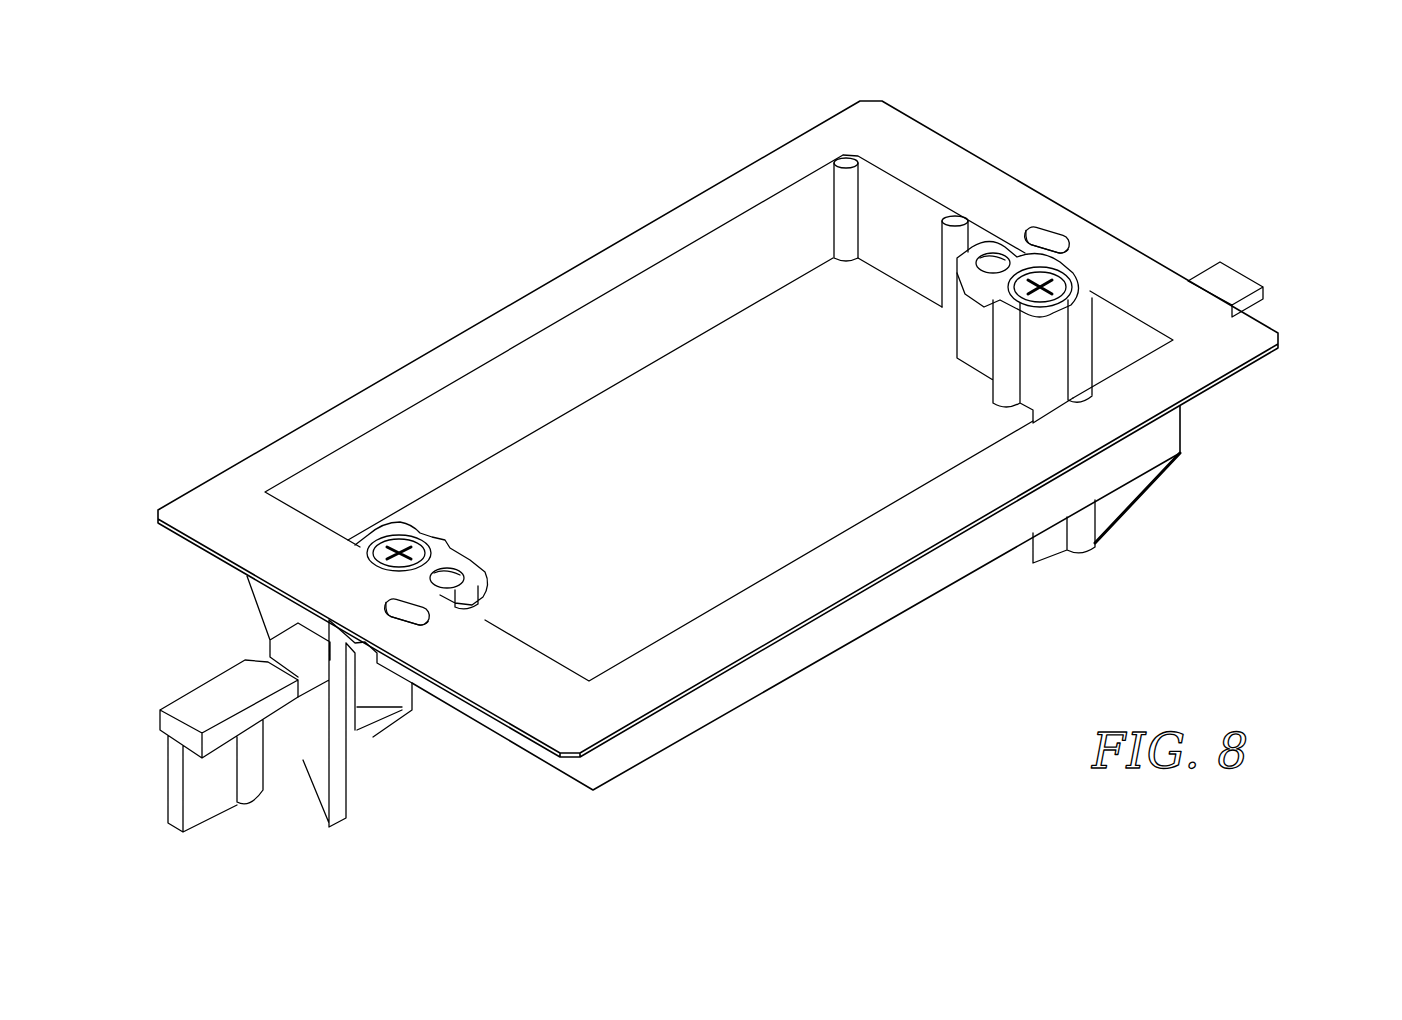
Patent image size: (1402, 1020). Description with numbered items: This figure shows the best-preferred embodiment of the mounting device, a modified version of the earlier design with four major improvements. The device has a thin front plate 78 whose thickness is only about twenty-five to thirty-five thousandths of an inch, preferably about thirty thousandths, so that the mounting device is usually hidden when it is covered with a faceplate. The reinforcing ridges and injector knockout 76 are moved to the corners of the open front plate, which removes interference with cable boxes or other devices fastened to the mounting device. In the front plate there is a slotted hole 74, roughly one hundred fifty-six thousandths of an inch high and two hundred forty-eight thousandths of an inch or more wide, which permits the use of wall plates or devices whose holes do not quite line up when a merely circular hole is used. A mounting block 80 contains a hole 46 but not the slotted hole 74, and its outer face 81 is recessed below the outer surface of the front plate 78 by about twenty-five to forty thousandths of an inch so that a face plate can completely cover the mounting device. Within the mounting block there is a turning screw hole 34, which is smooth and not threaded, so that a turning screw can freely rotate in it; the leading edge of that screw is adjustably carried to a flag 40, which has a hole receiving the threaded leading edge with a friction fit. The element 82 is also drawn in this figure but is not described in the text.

The turning screw hole 34 is at (420, 533).
The flag 40 is at (170, 682).
The hole 46 is at (993, 270).
The slotted hole 74 is at (1037, 228).
The injector knockout 76 is at (858, 263).
The front plate 78 is at (848, 567).
The mounting block 80 is at (723, 425).
The outer face 81 is at (980, 277).
The post 82 is at (963, 258).